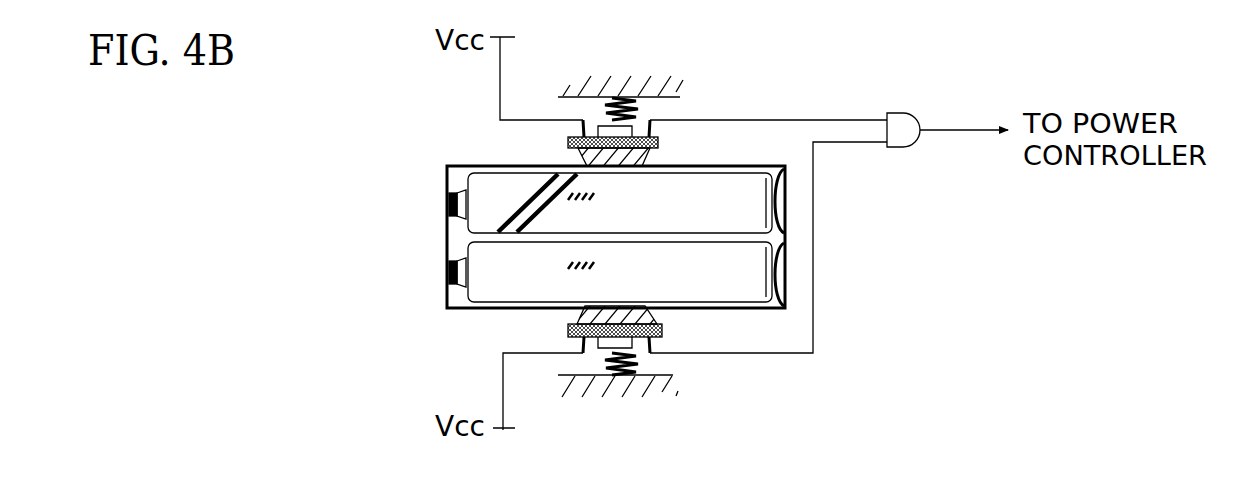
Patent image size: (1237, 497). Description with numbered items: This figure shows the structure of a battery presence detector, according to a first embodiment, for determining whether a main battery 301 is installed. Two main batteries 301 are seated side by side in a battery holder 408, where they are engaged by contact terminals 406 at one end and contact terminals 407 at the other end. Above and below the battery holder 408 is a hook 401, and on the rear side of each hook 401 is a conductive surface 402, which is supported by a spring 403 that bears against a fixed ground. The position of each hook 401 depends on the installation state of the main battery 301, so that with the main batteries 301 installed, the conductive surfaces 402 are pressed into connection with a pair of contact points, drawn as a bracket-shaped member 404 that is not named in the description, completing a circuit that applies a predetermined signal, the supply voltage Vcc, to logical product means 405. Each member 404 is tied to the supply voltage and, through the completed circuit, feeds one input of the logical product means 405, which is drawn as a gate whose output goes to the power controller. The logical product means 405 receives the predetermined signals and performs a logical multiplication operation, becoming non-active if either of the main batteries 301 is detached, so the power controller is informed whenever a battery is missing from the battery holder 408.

The main battery 301 is at (748, 198).
The hook 401 is at (640, 161).
The conductive surface 402 is at (660, 140).
The spring 403 is at (646, 98).
The terminal conductor 404 is at (583, 125).
The logical product means 405 is at (898, 111).
The contact terminal 406 is at (777, 200).
The contact terminal 407 is at (447, 272).
The battery holder 408 is at (428, 151).